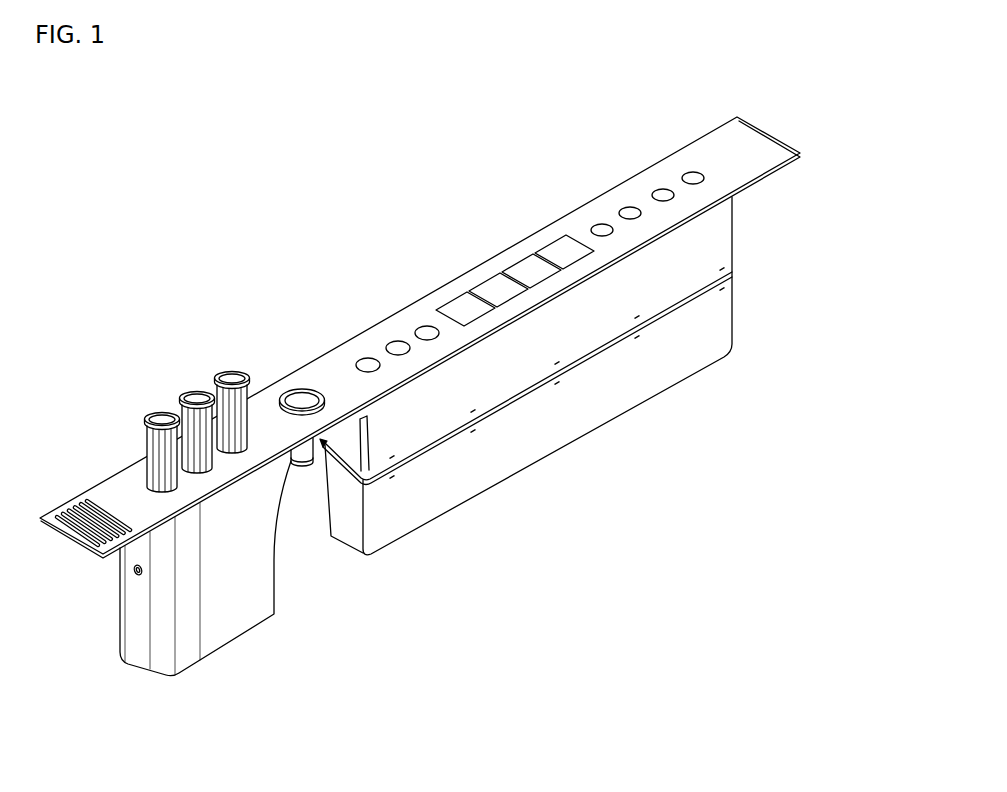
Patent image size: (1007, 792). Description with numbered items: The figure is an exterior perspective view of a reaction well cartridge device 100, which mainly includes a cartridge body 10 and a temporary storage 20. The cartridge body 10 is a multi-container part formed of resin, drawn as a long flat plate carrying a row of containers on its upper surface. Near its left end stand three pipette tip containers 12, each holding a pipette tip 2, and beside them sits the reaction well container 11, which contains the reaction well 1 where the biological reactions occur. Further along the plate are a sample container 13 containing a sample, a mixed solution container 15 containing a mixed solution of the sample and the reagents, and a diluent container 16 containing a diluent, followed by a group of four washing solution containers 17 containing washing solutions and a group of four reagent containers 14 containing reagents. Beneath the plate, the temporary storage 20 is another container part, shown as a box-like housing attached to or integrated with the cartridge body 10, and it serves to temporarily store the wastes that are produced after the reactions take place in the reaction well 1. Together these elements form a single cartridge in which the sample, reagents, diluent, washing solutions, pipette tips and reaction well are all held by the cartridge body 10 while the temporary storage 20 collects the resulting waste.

The reaction well cartridge device 100 is at (194, 251).
The cartridge body 10 is at (785, 126).
The temporary storage 20 is at (744, 319).
The reaction well 1 is at (298, 399).
The pipette tips 2 is at (217, 377).
The reaction well container 11 is at (323, 444).
The pipette tip containers 12 is at (243, 453).
The sample container 13 is at (365, 358).
The reagent containers 14 is at (602, 224).
The mixed solution container 15 is at (395, 341).
The diluent container 16 is at (425, 326).
The washing solution containers 17 is at (547, 242).